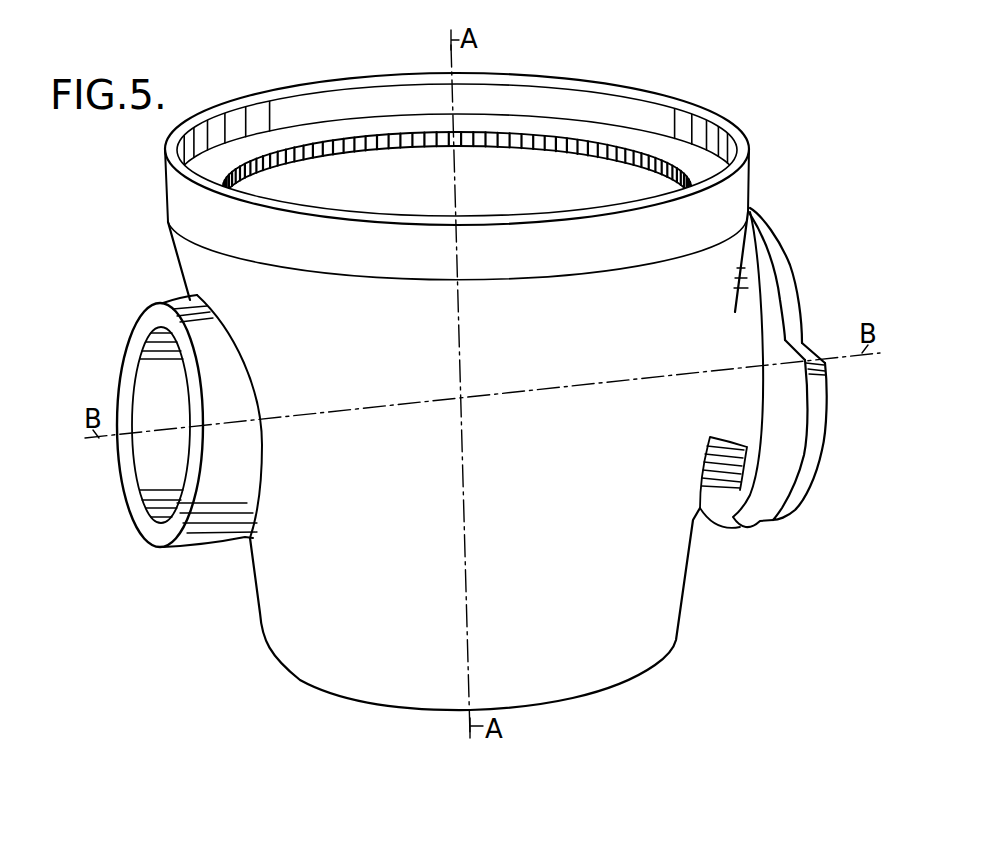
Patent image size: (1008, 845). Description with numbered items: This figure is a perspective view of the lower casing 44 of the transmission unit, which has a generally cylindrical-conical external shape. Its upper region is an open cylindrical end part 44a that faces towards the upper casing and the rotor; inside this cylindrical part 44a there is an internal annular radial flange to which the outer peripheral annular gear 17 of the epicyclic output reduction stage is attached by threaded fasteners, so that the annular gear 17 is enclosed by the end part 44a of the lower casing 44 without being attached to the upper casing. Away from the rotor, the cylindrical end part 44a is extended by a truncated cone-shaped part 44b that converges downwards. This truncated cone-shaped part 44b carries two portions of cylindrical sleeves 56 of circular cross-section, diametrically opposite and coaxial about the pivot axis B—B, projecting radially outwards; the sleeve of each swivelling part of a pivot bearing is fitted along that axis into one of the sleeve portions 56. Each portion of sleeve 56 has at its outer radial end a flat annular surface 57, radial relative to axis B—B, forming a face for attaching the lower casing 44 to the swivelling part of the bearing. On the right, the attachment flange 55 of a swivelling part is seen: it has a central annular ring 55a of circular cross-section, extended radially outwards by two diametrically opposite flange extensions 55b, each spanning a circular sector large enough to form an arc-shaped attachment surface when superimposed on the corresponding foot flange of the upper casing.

The outer peripheral annular gear 17 is at (530, 128).
The lower casing 44 is at (461, 364).
The open cylindrical end part 44a is at (392, 98).
The truncated cone-shaped part 44b is at (665, 562).
The attachment flange 55 is at (810, 361).
The central annular ring 55a is at (773, 252).
The flange extension 55b is at (777, 477).
The portion of cylindrical sleeve 56 is at (236, 477).
The flat annular surface 57 is at (145, 325).